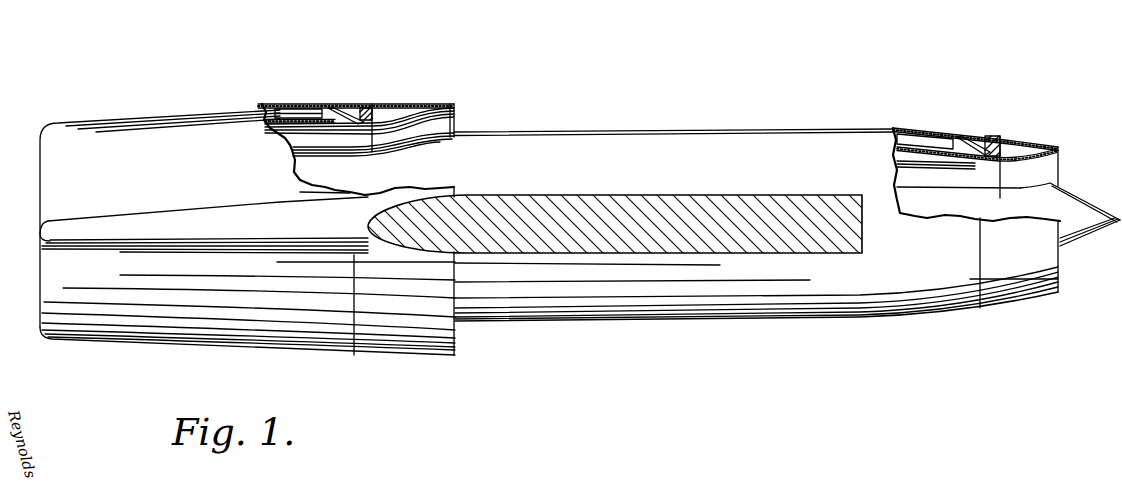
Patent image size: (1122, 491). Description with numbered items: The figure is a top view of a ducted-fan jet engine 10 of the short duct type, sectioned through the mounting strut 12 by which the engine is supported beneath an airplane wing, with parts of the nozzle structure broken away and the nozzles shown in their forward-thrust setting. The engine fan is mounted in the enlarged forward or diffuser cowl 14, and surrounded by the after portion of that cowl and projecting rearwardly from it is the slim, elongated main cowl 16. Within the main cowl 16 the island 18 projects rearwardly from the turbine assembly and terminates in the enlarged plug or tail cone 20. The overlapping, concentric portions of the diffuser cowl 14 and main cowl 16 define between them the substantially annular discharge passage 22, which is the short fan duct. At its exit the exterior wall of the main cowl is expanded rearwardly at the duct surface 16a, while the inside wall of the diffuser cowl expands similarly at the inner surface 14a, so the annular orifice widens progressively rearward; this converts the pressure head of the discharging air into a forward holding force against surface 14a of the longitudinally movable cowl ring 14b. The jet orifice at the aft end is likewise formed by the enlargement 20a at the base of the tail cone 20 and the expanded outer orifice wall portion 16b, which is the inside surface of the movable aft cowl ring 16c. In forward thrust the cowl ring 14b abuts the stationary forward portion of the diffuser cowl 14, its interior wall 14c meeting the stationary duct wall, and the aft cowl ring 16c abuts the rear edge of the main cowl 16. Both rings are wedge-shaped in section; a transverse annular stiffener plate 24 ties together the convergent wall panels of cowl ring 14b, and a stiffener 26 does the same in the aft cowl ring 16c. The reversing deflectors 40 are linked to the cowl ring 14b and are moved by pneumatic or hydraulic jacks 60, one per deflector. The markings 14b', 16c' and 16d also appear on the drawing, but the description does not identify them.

The engine 10 is at (580, 165).
The mounting strut 12 is at (675, 194).
The diffuser cowl 14 is at (142, 106).
The expanded inner surface of cowl ring 14a is at (456, 113).
The cowl ring 14b is at (356, 91).
The duct wall seal 14b' is at (362, 83).
The cowl ring interior wall 14c is at (308, 125).
The main cowl 16 is at (909, 124).
The expanded duct surface 16a is at (401, 140).
The expanded outer orifice wall portion 16b is at (1050, 148).
The aft cowl ring 16c is at (995, 122).
The aft panel line 16c' is at (999, 281).
The aft inner wall 16d is at (970, 157).
The island 18 is at (933, 188).
The tail cone 20 is at (1072, 194).
The enlargement of tail cone base 20a is at (1048, 182).
The discharge passage 22 is at (346, 145).
The stiffener plate 24 is at (380, 108).
The stiffener 26 is at (1006, 147).
The reversing deflector 40 is at (346, 114).
The actuating jack 60 is at (291, 112).